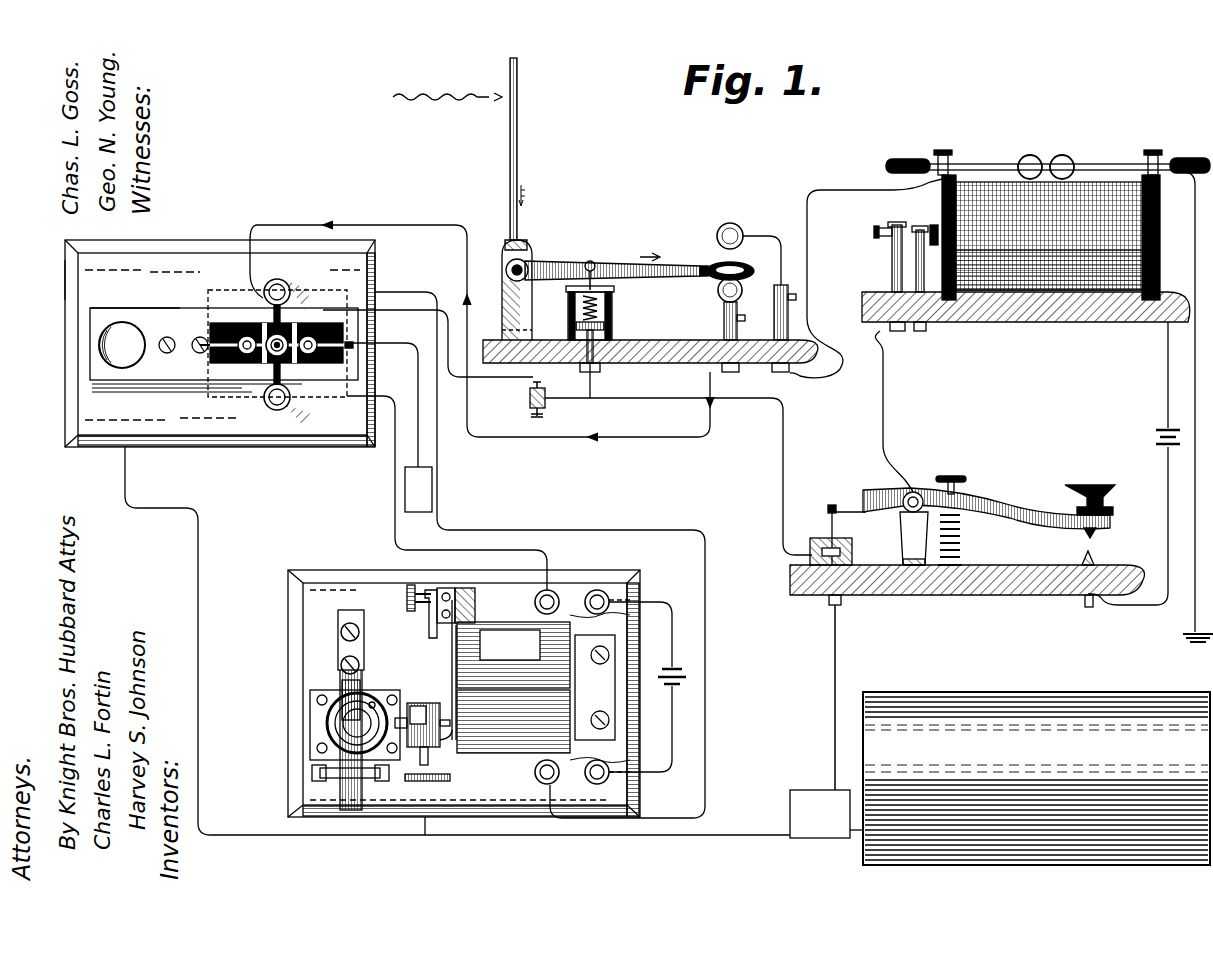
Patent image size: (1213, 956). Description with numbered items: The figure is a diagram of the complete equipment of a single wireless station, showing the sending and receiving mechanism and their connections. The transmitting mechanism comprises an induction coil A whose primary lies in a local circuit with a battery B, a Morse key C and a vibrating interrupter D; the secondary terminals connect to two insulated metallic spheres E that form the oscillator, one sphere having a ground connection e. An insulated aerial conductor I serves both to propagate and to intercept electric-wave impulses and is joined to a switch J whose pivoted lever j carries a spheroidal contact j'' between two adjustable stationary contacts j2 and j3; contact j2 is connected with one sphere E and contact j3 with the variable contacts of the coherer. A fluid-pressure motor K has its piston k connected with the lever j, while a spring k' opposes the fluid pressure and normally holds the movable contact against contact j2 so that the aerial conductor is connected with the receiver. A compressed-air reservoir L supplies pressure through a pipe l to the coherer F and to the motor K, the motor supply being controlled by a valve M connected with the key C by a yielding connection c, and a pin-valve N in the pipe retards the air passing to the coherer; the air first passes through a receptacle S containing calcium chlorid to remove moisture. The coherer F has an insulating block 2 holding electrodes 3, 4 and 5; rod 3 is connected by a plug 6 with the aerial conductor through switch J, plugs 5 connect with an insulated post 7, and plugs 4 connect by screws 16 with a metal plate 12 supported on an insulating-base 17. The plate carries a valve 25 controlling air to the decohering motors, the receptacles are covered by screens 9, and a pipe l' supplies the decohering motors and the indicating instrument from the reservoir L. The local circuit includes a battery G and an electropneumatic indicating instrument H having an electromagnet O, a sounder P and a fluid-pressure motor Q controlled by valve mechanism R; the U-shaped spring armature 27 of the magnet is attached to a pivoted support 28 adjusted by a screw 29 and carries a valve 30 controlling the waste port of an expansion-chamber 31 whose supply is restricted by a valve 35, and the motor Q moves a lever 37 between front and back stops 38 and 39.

The coherer F is at (220, 330).
The insulating-base 17 is at (72, 282).
The metal plate 12 is at (125, 316).
The valve 25 is at (122, 345).
The block 2 is at (222, 322).
The rod 3 is at (285, 361).
The plugs 4 is at (208, 350).
The plugs 5 is at (245, 332).
The metallic plug 6 is at (270, 362).
The insulated post 7 is at (282, 282).
The screws 16 is at (208, 342).
The screens 9 is at (418, 489).
The pipe l is at (567, 554).
The pipe l' is at (457, 653).
The aerial conductor I is at (524, 149).
The fluid-pressure motor K is at (528, 312).
The switch J is at (612, 254).
The pivoted lever j is at (627, 287).
The spheroidal contact j'' is at (726, 284).
The stationary spherical contact j2 is at (735, 225).
The stationary spherical contact j3 is at (744, 294).
The spring k' is at (602, 313).
The piston k is at (611, 344).
The pin-valve N is at (520, 401).
The induction coil A is at (1036, 236).
The metallic spheres E is at (1062, 156).
The vibrating interrupter D is at (906, 264).
The ground connection e is at (1190, 636).
The battery B is at (1152, 440).
The Morse key C is at (967, 533).
The yielding connection c is at (858, 511).
The valve M is at (852, 556).
The receptacle S is at (826, 814).
The compressed-air reservoir L is at (1036, 778).
The signal indicating instrument H is at (446, 693).
The electromagnet O is at (543, 688).
The sounder P is at (337, 710).
The fluid-pressure motor Q is at (325, 733).
The valve mechanism R is at (428, 734).
The battery G is at (682, 670).
The armature 27 is at (448, 676).
The pivoted support 28 is at (426, 638).
The screw 29 is at (408, 600).
The valve 30 is at (450, 740).
The expansion-chamber 31 is at (405, 718).
The valve 35 is at (450, 778).
The lever 37 is at (345, 690).
The front stop 38 is at (342, 665).
The back stop 39 is at (342, 633).